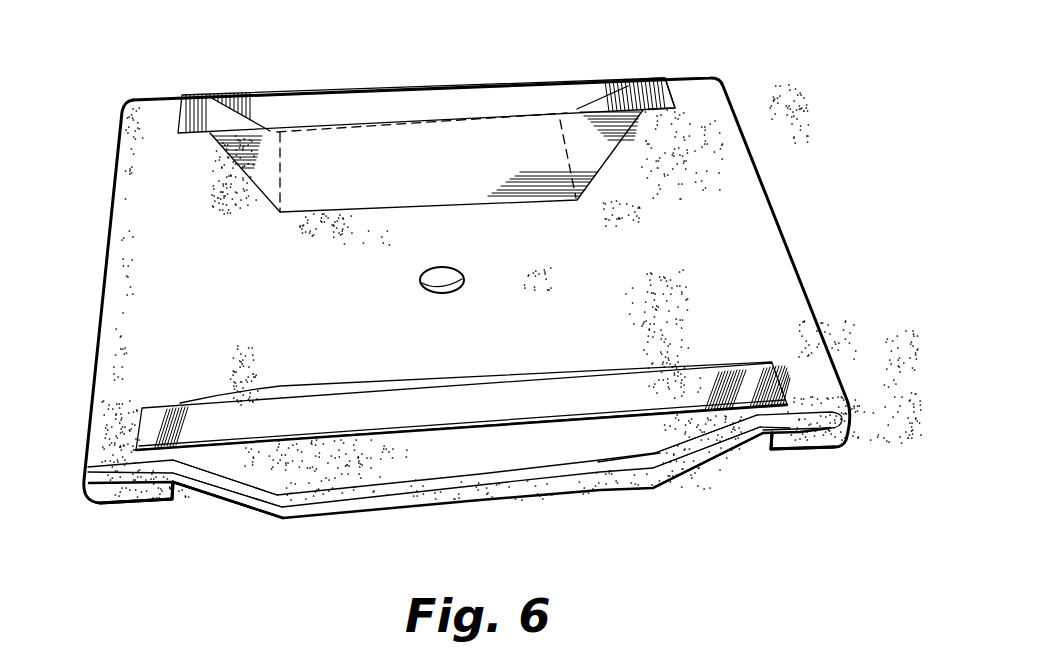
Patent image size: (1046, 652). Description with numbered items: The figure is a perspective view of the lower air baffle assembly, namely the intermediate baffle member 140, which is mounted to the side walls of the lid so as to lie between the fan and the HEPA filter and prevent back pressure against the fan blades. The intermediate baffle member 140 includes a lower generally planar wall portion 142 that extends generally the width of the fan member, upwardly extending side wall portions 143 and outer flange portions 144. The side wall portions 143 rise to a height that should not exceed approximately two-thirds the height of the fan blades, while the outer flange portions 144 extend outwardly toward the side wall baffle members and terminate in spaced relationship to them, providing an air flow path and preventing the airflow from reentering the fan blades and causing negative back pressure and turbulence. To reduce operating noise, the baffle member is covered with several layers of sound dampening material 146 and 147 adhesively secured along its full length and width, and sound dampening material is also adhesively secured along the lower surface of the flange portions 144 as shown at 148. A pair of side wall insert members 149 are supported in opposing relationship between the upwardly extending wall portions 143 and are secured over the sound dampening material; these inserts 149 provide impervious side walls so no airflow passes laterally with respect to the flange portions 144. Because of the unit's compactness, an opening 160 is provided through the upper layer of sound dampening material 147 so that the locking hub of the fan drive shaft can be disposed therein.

The intermediate baffle member 140 is at (209, 88).
The lower generally planar wall portion 142 is at (520, 501).
The upwardly extending side wall portions 143 is at (250, 509).
The outer flange portions 144 is at (125, 484).
The sound dampening material 146 is at (678, 75).
The sound dampening material 147 is at (372, 504).
The sound dampening material on flange portions 148 is at (170, 495).
The side wall insert members 149 is at (385, 108).
The opening 160 is at (420, 278).